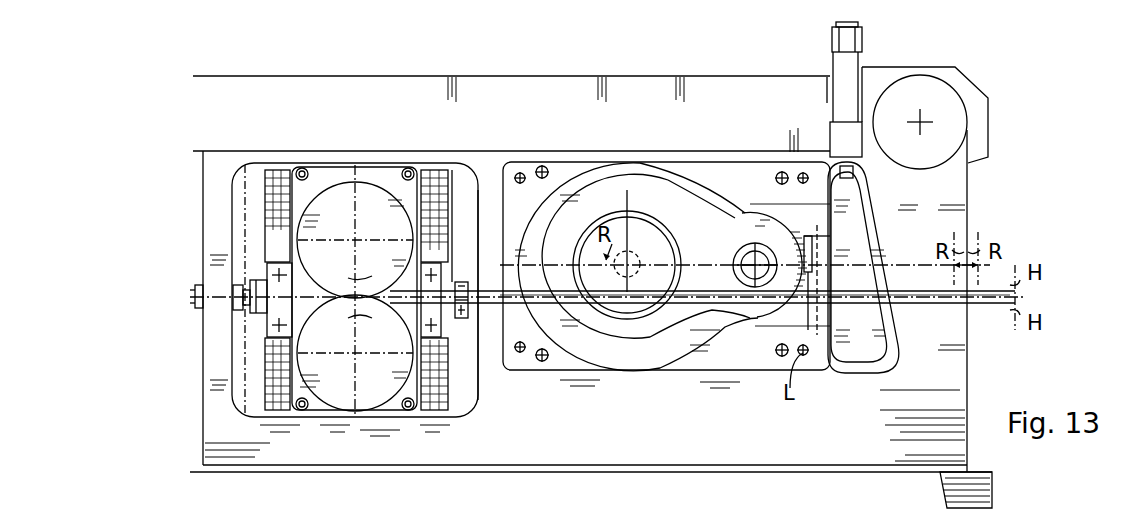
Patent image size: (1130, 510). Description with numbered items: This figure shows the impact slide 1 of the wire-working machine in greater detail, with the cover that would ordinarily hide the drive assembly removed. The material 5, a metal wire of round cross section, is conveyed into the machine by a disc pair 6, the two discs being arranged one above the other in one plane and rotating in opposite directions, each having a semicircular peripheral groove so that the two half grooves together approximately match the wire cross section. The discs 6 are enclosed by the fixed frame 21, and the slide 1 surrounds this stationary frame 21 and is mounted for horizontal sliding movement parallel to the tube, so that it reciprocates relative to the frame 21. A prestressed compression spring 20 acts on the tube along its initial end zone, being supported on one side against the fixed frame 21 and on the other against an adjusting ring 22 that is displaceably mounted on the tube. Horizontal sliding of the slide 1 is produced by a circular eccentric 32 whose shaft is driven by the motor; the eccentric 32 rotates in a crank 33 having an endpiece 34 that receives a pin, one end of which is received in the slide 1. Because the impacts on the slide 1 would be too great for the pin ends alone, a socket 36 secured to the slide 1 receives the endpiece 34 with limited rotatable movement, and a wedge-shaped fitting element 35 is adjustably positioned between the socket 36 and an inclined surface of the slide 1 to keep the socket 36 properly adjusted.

The impact slide 1 is at (542, 433).
The material 5 is at (313, 296).
The disc pair 6 is at (378, 236).
The compression spring 20 is at (459, 282).
The fixed frame 21 is at (428, 203).
The adjusting ring 22 is at (482, 282).
The circular eccentric 32 is at (656, 244).
The crank 33 is at (722, 246).
The endpiece 34 is at (764, 242).
The fitting element 35 is at (860, 238).
The socket 36 is at (826, 240).